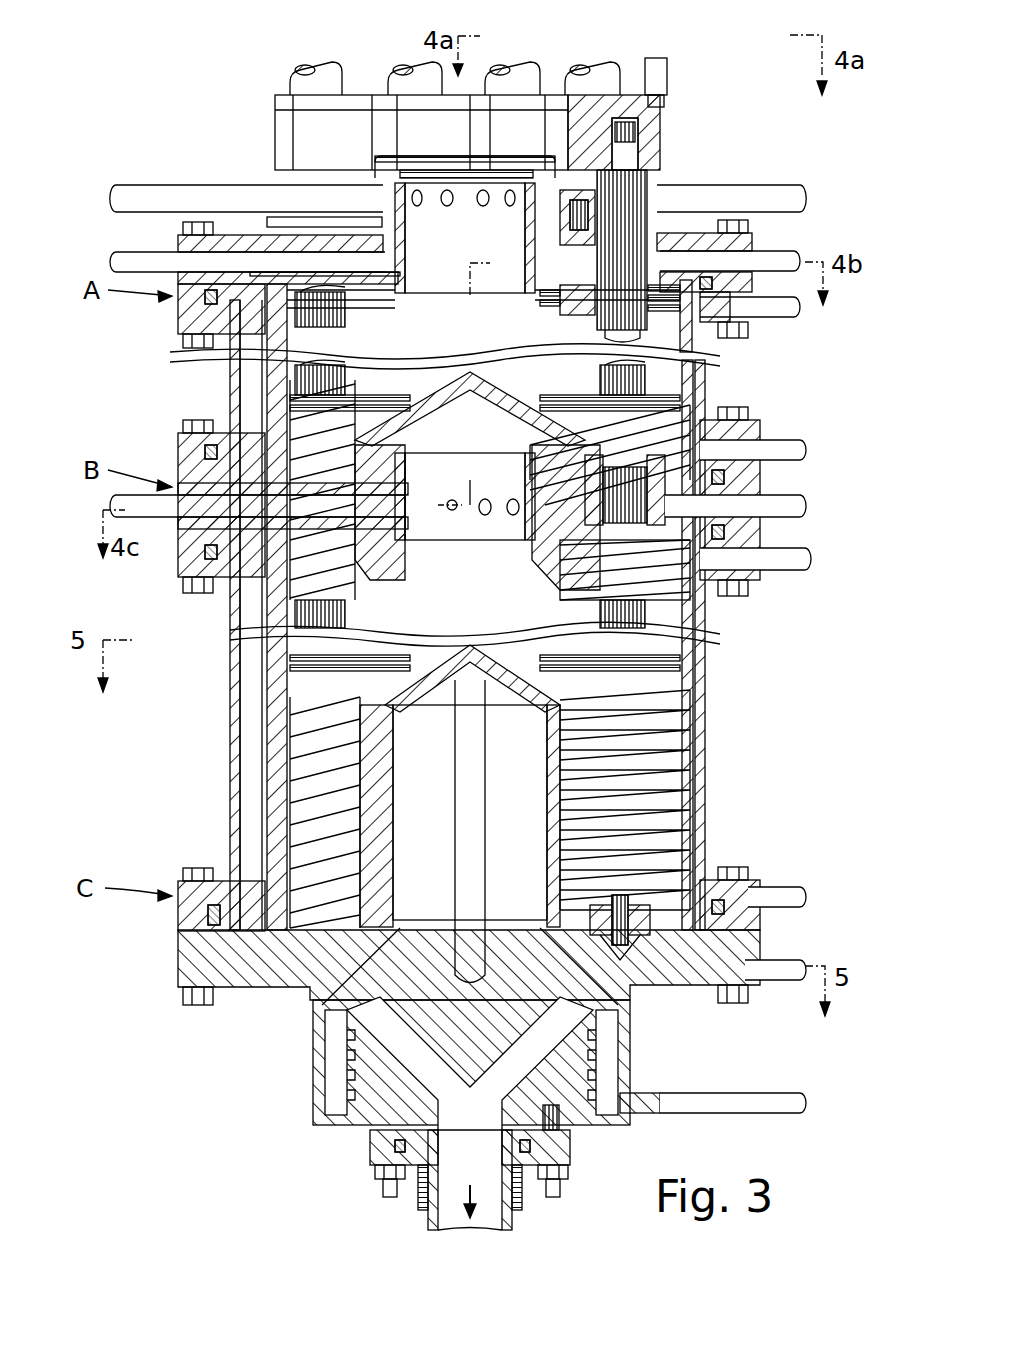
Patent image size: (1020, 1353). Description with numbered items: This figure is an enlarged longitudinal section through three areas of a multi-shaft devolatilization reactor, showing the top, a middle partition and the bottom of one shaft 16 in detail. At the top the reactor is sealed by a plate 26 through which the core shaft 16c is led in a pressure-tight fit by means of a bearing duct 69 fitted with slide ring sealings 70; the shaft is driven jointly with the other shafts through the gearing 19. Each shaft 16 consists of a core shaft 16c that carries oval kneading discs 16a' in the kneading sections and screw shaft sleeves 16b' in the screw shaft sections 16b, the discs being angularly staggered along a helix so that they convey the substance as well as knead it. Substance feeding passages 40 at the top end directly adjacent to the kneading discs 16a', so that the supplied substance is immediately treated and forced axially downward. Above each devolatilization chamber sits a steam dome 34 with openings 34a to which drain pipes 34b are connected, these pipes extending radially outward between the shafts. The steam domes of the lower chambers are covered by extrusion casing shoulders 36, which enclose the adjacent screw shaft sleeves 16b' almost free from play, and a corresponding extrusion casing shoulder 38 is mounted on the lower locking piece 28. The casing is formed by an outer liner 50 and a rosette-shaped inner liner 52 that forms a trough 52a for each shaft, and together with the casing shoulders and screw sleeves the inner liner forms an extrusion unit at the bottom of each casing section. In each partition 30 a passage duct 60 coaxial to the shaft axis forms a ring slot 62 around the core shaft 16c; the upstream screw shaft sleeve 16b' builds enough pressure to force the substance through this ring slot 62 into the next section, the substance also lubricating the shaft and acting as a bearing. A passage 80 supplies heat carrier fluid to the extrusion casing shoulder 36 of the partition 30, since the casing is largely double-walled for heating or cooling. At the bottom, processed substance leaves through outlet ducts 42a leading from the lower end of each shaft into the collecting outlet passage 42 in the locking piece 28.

The shaft 16 is at (310, 790).
The kneading discs 16a' is at (542, 509).
The screw shaft section 16b is at (442, 696).
The screw shaft sleeve 16b' is at (665, 648).
The core shaft 16c is at (625, 205).
The gearing 19 is at (658, 66).
The plate 26 is at (200, 320).
The locking piece 28 is at (298, 1006).
The partition 30 is at (195, 560).
The steam dome 34 is at (422, 265).
The openings 34a is at (481, 203).
The drain pipes 34b is at (200, 188).
The extrusion casing shoulder 36 is at (433, 158).
The extrusion casing shoulder 38 is at (455, 668).
The substance feeding passage 40 is at (790, 285).
The outlet passage 42 is at (455, 1185).
The outlet duct 42a is at (570, 1020).
The outer liner 50 is at (705, 828).
The inner liner 52 is at (695, 722).
The trough 52a is at (565, 856).
The passage duct 60 is at (470, 409).
The ring slot 62 is at (560, 510).
The bearing duct 69 is at (700, 272).
The slide ring sealings 70 is at (605, 312).
The passage 80 is at (235, 262).